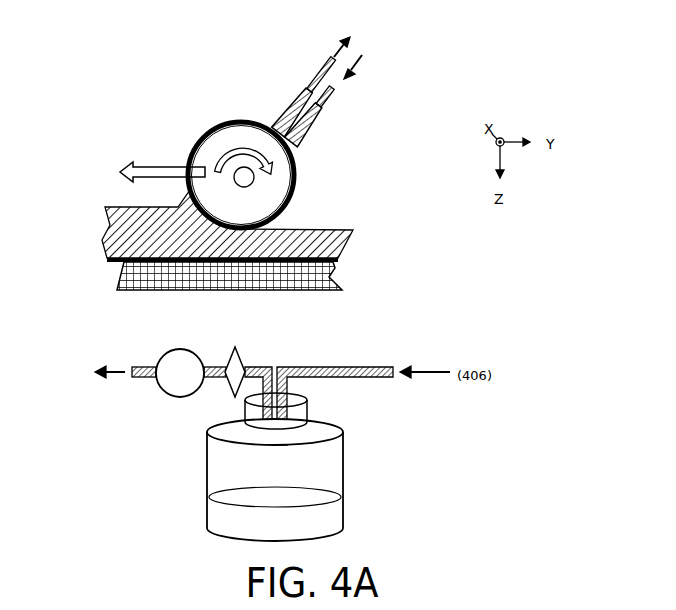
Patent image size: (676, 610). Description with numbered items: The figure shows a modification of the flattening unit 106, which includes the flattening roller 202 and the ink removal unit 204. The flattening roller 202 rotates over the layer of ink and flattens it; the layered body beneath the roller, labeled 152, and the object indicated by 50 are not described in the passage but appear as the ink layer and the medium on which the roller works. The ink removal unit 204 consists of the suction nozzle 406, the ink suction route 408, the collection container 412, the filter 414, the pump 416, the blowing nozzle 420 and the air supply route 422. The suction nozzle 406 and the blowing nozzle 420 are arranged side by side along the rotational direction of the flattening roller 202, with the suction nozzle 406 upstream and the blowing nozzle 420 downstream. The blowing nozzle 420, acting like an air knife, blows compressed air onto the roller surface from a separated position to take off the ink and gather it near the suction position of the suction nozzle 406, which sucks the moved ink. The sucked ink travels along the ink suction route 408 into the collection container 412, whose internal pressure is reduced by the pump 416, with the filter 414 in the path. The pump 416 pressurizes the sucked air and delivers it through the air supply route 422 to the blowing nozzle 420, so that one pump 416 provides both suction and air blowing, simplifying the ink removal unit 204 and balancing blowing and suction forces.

The flattening unit 106 is at (497, 60).
The flattening roller 202 is at (292, 190).
The substrate layer 152 is at (352, 250).
The workpiece 50 is at (112, 270).
The suction nozzle 406 is at (285, 105).
The ink suction route 408 is at (332, 54).
The blowing nozzle 420 is at (326, 108).
The air supply route 422 is at (370, 59).
The pump 416 is at (166, 397).
The filter 414 is at (237, 351).
The collection container 412 is at (177, 480).
The ink removal unit 204 is at (500, 310).